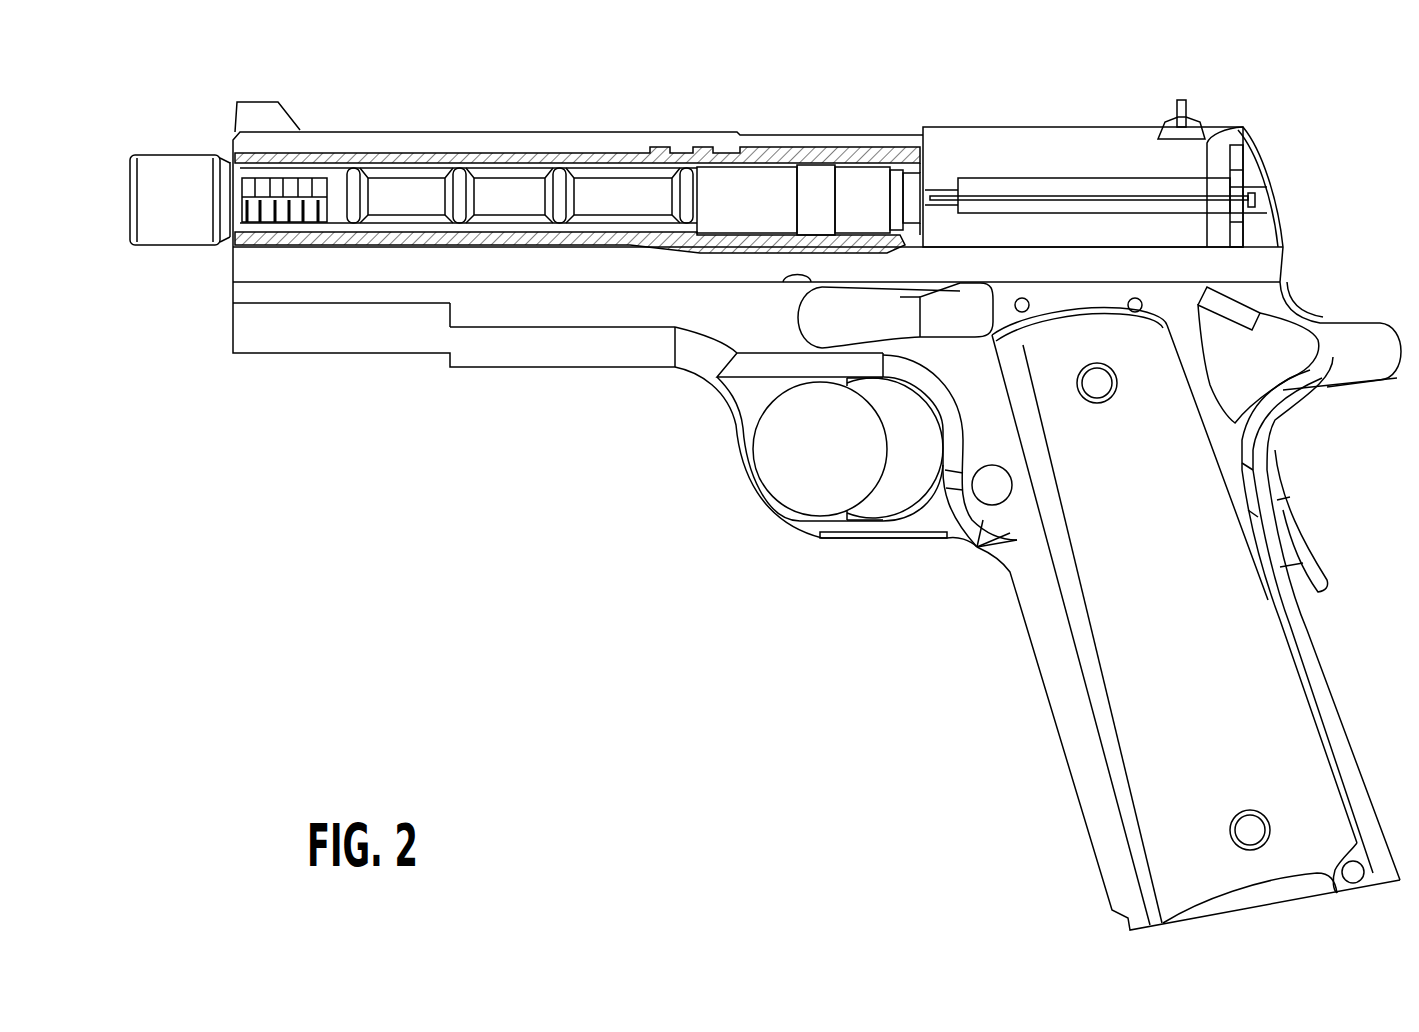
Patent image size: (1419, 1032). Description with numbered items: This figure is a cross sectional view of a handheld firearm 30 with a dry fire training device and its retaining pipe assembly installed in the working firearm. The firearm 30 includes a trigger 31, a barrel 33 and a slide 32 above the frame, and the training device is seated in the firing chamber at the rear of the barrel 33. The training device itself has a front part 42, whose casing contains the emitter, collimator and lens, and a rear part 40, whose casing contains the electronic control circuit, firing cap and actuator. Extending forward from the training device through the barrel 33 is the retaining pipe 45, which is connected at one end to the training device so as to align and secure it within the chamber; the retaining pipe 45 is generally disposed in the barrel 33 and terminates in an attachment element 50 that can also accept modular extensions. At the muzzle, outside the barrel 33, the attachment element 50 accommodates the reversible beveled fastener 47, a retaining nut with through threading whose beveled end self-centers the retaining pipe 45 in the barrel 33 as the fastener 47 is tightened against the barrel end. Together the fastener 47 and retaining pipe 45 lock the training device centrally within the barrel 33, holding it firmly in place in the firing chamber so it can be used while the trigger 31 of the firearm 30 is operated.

The handheld firearm 30 is at (508, 528).
The trigger 31 is at (838, 487).
The slide 32 is at (1215, 142).
The barrel 33 is at (772, 106).
The rear part 40 is at (865, 173).
The front part 42 is at (732, 177).
The retaining pipe 45 is at (515, 187).
The fastener 47 is at (182, 228).
The attachment element 50 is at (305, 190).